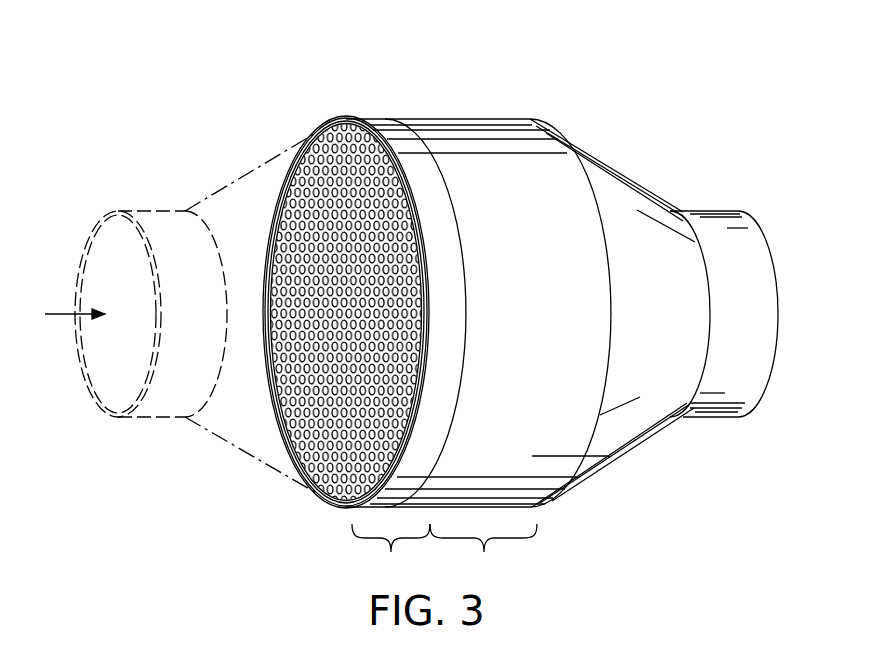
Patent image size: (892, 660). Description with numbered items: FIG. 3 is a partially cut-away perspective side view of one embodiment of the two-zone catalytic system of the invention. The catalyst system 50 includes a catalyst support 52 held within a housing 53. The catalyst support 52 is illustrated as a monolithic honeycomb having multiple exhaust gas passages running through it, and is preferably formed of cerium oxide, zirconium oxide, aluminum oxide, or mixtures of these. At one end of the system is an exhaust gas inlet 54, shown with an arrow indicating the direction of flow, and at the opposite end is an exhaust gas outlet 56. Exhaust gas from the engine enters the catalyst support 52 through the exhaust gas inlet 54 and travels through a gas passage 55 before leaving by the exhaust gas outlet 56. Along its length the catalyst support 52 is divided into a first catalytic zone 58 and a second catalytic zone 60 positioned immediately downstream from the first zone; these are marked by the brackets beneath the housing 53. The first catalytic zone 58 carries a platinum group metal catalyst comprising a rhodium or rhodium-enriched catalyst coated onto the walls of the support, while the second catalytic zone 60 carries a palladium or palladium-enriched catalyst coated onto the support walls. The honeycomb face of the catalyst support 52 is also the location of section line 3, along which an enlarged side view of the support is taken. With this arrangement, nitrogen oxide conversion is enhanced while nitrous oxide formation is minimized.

The catalyst system 50 is at (650, 100).
The catalyst support 52 is at (281, 246).
The housing 53 is at (533, 120).
The exhaust gas inlet 54 is at (99, 252).
The gas passage 55 is at (274, 404).
The exhaust gas outlet 56 is at (707, 418).
The first catalytic zone 58 is at (409, 356).
The second catalytic zone 60 is at (483, 559).
The line 3- 3 is at (331, 484).